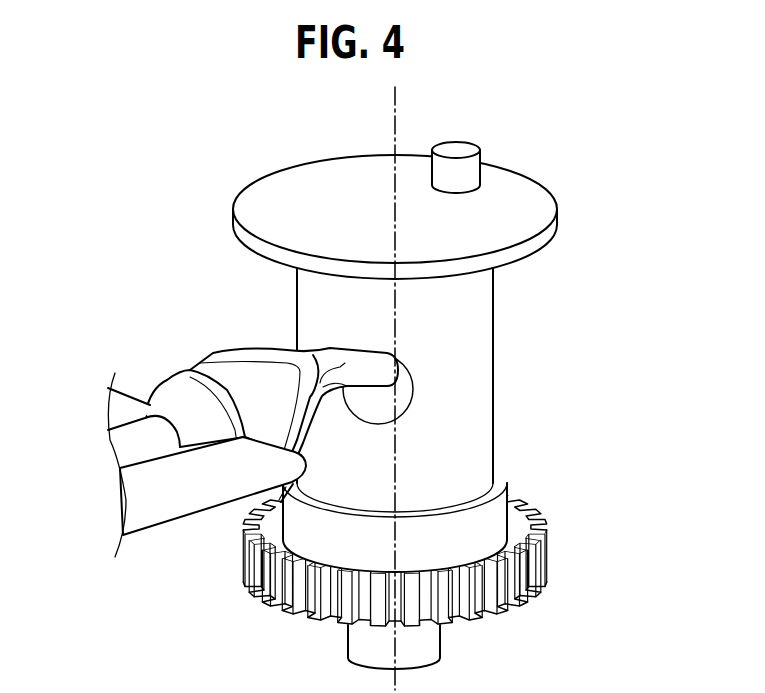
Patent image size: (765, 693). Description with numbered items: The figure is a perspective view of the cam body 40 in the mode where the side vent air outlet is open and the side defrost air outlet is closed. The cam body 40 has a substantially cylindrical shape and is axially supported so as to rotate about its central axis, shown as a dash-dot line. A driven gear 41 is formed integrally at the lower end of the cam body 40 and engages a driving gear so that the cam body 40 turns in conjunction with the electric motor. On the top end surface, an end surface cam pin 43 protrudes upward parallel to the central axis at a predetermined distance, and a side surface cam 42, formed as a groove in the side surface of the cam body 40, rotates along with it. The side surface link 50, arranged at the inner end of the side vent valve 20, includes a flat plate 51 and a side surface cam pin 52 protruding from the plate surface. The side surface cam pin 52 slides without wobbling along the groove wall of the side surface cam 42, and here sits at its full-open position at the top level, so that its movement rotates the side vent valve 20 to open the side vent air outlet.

The side vent valve 20 is at (158, 485).
The cam body 40 is at (435, 370).
The driven gear 41 is at (548, 562).
The side surface cam 42 is at (392, 424).
The end surface cam pin 43 is at (459, 151).
The side surface link 50 is at (235, 379).
The flat plate 51 is at (247, 378).
The side surface cam pin 52 is at (328, 358).